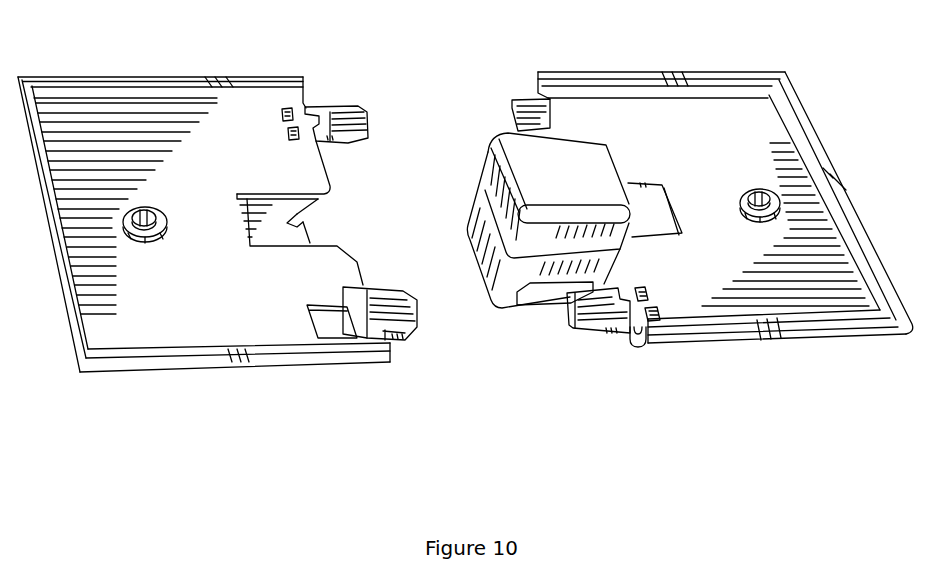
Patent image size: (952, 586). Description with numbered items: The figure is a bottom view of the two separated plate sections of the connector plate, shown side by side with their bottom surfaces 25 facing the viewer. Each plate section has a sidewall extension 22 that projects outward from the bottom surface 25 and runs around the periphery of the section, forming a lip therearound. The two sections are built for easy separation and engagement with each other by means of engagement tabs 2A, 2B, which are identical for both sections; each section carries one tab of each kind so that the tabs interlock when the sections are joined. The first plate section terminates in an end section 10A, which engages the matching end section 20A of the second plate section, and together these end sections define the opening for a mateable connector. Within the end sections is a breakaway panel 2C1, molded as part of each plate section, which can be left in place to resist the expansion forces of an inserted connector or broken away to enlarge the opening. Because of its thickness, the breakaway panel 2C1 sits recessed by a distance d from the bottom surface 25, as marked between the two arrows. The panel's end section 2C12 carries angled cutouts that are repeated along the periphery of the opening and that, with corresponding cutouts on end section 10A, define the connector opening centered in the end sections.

The sidewall extension 22 is at (68, 78).
The engagement tab 2B is at (341, 107).
The end section 10A is at (356, 156).
The breakaway panel 2C1 is at (275, 221).
The distance d is at (288, 216).
The end section 2C12 is at (306, 218).
The engagement tab 2A is at (408, 339).
The bottom surface 25 is at (178, 328).
The end section 20A is at (558, 318).